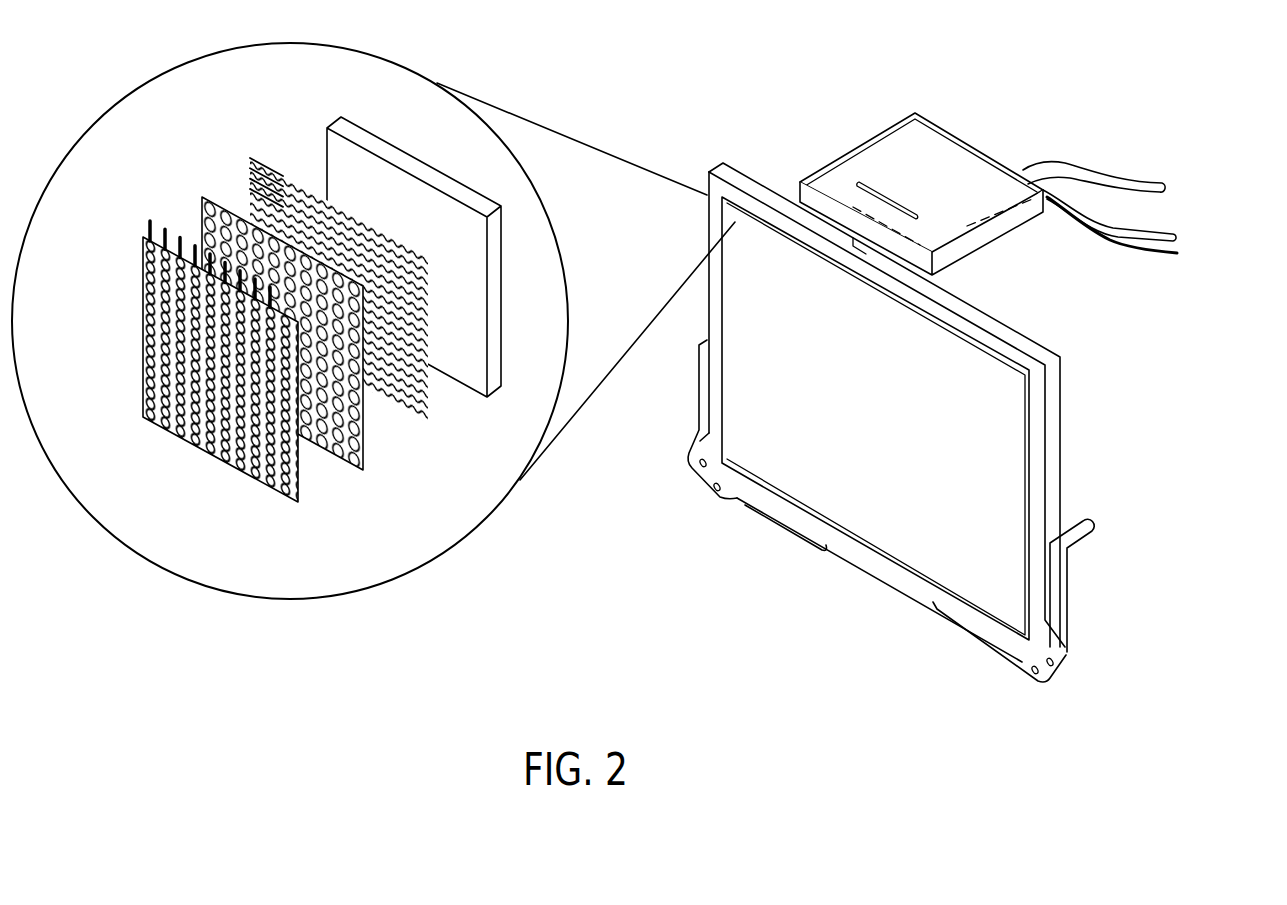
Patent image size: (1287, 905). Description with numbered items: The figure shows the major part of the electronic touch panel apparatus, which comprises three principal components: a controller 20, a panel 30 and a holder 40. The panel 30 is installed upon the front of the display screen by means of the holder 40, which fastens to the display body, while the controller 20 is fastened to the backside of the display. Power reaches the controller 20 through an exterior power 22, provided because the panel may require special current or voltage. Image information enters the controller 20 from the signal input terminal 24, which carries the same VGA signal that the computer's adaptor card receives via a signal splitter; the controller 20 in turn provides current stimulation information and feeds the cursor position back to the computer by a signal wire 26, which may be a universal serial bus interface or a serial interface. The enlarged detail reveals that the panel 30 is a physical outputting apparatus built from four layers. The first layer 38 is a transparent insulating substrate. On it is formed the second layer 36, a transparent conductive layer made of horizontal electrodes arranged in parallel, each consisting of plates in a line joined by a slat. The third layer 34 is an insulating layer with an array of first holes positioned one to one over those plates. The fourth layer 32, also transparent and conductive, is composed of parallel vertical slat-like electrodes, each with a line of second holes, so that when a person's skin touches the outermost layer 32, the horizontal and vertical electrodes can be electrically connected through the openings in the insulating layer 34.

The controller 20 is at (908, 158).
The exterior power 22 is at (1117, 185).
The signal input terminal 24 is at (1160, 235).
The signal wire 26 is at (1130, 243).
The panel 30 is at (815, 462).
The fourth layer 32 is at (205, 455).
The third layer 34 is at (337, 453).
The second layer 36 is at (408, 417).
The first layer 38 is at (468, 353).
The holder 40 is at (663, 477).